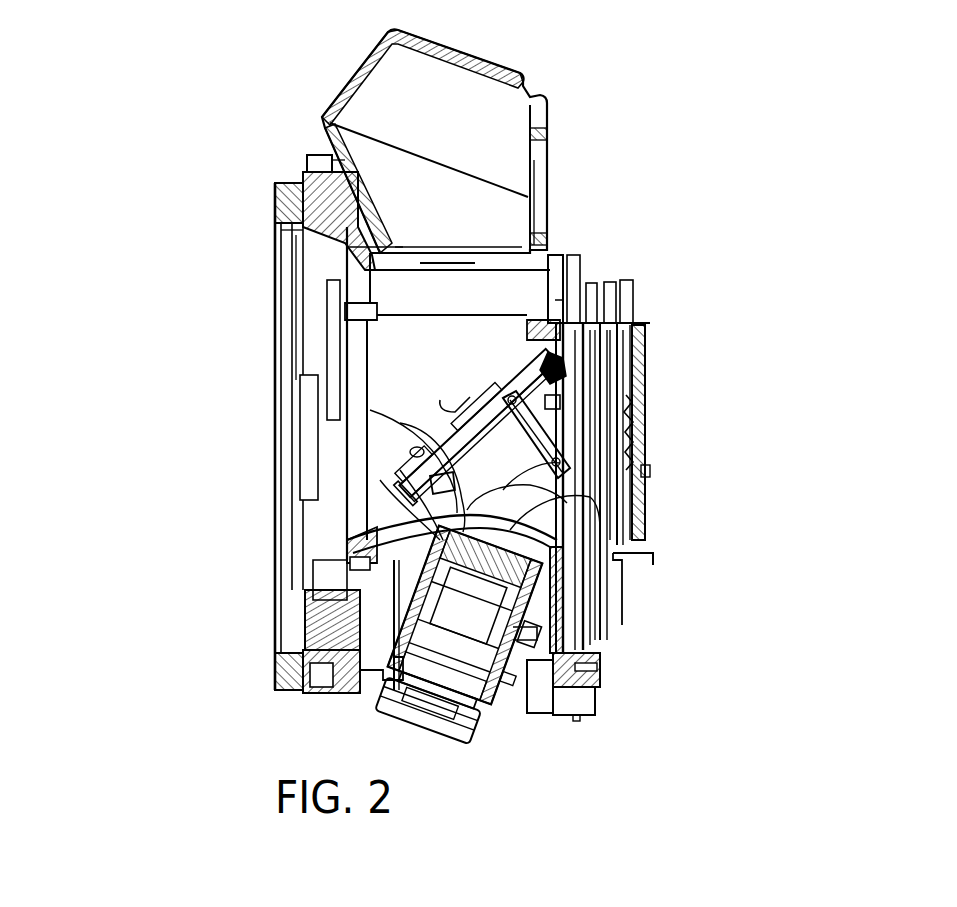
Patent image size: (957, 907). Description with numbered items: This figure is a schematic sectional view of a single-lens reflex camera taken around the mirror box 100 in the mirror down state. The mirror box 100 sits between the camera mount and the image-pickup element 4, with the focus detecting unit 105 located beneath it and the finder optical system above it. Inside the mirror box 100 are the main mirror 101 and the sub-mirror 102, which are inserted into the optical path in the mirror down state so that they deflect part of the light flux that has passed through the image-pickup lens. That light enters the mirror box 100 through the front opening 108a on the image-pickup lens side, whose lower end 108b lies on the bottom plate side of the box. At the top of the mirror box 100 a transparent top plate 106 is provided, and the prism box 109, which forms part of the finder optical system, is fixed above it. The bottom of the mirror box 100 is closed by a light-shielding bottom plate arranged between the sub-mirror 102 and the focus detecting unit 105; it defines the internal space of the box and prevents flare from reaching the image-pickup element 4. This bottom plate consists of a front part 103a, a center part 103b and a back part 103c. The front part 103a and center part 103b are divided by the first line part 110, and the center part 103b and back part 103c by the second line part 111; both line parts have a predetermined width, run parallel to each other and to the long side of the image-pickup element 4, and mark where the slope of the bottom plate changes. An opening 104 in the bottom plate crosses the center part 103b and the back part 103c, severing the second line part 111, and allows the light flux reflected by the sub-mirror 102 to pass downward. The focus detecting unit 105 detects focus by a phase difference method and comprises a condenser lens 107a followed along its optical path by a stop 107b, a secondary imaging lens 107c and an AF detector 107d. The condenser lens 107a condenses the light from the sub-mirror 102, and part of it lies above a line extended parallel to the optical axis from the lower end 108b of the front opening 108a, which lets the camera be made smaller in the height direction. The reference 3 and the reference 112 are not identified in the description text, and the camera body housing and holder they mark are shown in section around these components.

The camera body housing 3 is at (277, 183).
The image-pickup element 4 is at (648, 393).
The mirror box 100 is at (567, 248).
The main mirror 101 is at (600, 383).
The sub-mirror 102 is at (647, 415).
The front part 103a is at (400, 470).
The center part 103b is at (367, 430).
The back part 103c is at (642, 517).
The opening 104 is at (643, 525).
The focus detecting unit 105 is at (447, 733).
The top plate 106 is at (442, 273).
The condenser lens 107a is at (363, 567).
The stop 107b is at (537, 693).
The secondary imaging lens 107c is at (473, 693).
The AF detector 107d is at (403, 703).
The front opening 108a is at (370, 410).
The lower end 108b is at (370, 540).
The prism box 109 is at (443, 120).
The first line part 110 is at (427, 513).
The second line part 111 is at (643, 500).
The sensor holder 112 is at (645, 433).